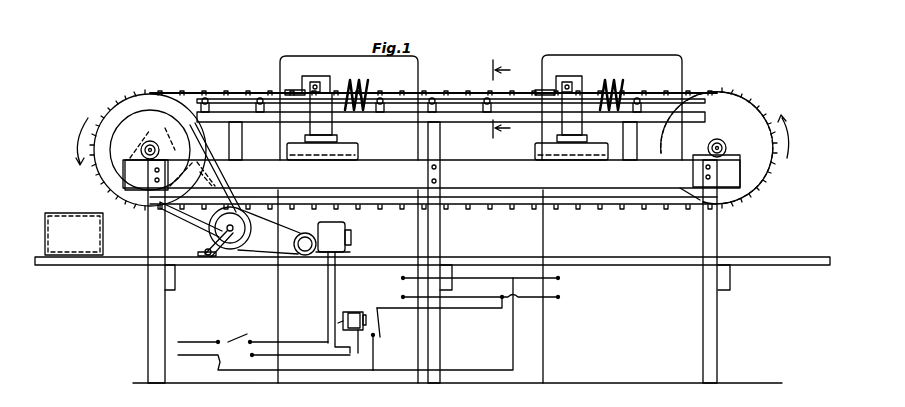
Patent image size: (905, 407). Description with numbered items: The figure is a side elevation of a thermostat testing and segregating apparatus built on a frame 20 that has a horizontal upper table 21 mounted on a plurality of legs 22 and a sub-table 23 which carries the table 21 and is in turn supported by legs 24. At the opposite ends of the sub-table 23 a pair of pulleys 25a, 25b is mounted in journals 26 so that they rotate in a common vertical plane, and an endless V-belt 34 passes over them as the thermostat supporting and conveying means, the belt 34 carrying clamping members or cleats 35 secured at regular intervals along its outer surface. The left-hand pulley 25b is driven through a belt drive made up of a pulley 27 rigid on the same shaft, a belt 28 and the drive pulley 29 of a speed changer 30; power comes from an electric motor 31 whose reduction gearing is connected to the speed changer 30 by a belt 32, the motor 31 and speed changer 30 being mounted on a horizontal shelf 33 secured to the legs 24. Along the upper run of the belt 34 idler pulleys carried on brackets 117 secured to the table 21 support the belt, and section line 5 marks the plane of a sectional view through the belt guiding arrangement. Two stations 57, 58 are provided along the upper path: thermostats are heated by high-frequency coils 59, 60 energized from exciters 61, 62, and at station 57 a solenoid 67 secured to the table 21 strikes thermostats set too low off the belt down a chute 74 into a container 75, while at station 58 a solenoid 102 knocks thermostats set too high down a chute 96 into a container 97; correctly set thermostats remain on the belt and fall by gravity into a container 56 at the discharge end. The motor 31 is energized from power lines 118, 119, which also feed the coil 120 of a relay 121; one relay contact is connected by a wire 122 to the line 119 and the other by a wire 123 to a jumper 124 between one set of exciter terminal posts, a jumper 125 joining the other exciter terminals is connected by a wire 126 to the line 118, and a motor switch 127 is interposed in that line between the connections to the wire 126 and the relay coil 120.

The section line 5 is at (507, 99).
The frame 20 is at (735, 298).
The upper table 21 is at (252, 112).
The legs 22 is at (240, 155).
The sub-table 23 is at (482, 168).
The legs 24 is at (148, 312).
The pulley 25a is at (738, 103).
The pulley 25b is at (137, 100).
The journals 26 is at (143, 144).
The pulley 27 is at (113, 158).
The belt 28 is at (180, 216).
The drive pulley 29 is at (234, 245).
The speed changer 30 is at (261, 245).
The electric motor 31 is at (364, 235).
The belt 32 is at (288, 222).
The horizontal shelf 33 is at (373, 262).
The endless V-belt 34 is at (181, 93).
The cleats 35 is at (214, 84).
The container 56 is at (77, 245).
The station 57 is at (552, 73).
The station 58 is at (292, 73).
The high-frequency coil 59 is at (602, 86).
The high-frequency coil 60 is at (352, 86).
The exciter 61 is at (683, 76).
The exciter 62 is at (420, 68).
The solenoid 67 is at (568, 72).
The chute 74 is at (562, 128).
The container 75 is at (585, 155).
The chute 96 is at (332, 125).
The container 97 is at (340, 155).
The solenoid 102 is at (305, 76).
The brackets 117 is at (440, 108).
The power line 118 is at (299, 340).
The power line 119 is at (210, 354).
The relay coil 120 is at (352, 313).
The relay 121 is at (346, 307).
The wire 122 is at (375, 350).
The wire 123 is at (458, 308).
The jumper 124 is at (498, 298).
The jumper 125 is at (498, 278).
The wire 126 is at (500, 371).
The motor switch 127 is at (235, 333).